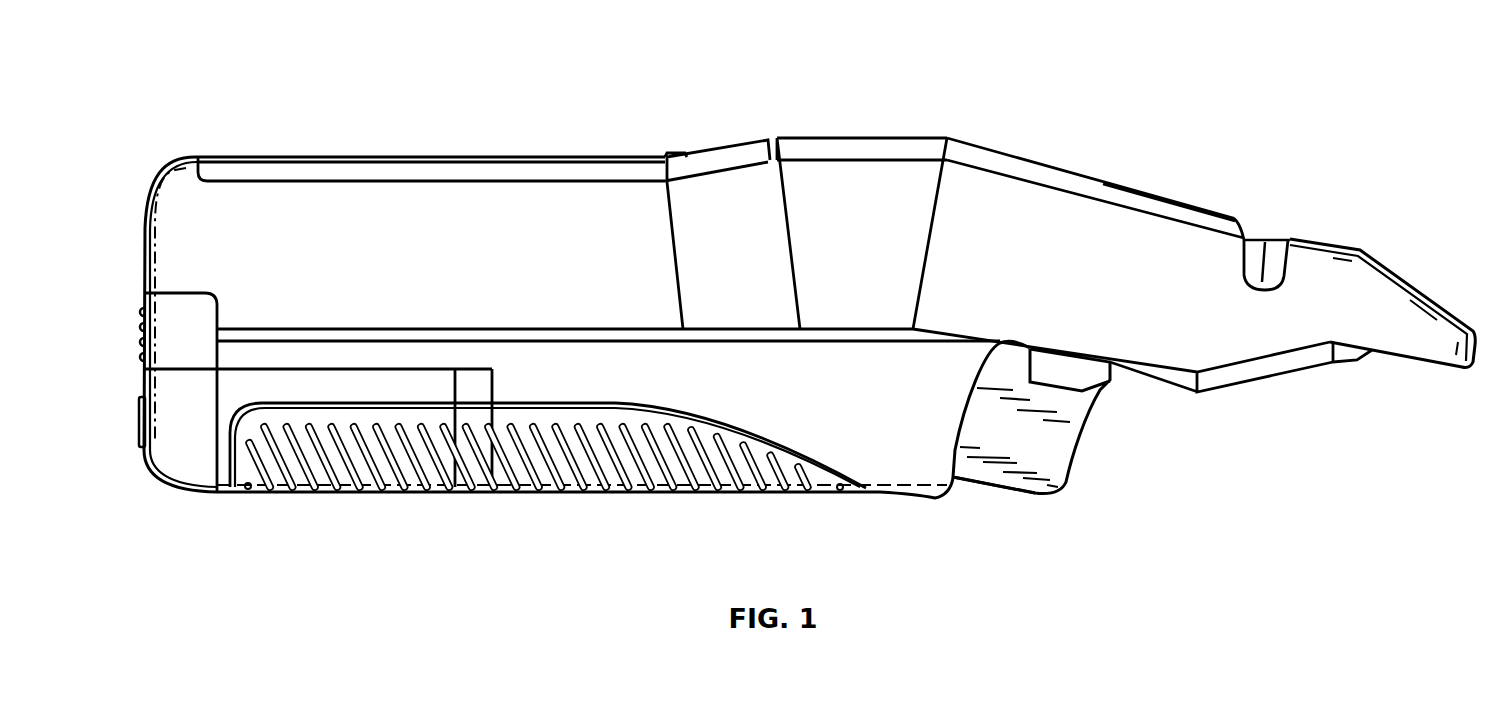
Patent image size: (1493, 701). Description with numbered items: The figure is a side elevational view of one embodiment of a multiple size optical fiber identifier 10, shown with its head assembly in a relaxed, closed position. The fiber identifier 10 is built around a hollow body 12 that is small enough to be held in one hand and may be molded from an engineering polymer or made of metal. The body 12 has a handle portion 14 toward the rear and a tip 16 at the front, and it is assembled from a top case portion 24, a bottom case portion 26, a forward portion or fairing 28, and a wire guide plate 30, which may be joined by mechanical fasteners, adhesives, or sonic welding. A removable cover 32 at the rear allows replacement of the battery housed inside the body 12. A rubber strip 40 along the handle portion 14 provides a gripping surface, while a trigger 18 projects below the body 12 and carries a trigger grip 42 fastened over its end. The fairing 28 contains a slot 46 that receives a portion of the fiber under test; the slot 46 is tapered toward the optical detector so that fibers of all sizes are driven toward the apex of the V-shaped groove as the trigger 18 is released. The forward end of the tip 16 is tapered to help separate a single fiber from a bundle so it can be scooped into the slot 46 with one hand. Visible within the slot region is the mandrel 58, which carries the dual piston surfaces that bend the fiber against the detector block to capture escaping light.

The fiber identifier 10 is at (538, 95).
The hollow body 12 is at (863, 135).
The handle portion 14 is at (215, 510).
The tip 16 is at (1372, 247).
The trigger 18 is at (1005, 491).
The top case portion 24 is at (423, 212).
The bottom case portion 26 is at (838, 447).
The fairing 28 is at (1042, 203).
The wire guide plate 30 is at (1273, 370).
The removable cover 32 is at (143, 452).
The rubber strip 40 is at (423, 490).
The trigger grip 42 is at (1070, 458).
The slot 46 is at (1266, 240).
The mandrel 58 is at (1244, 268).